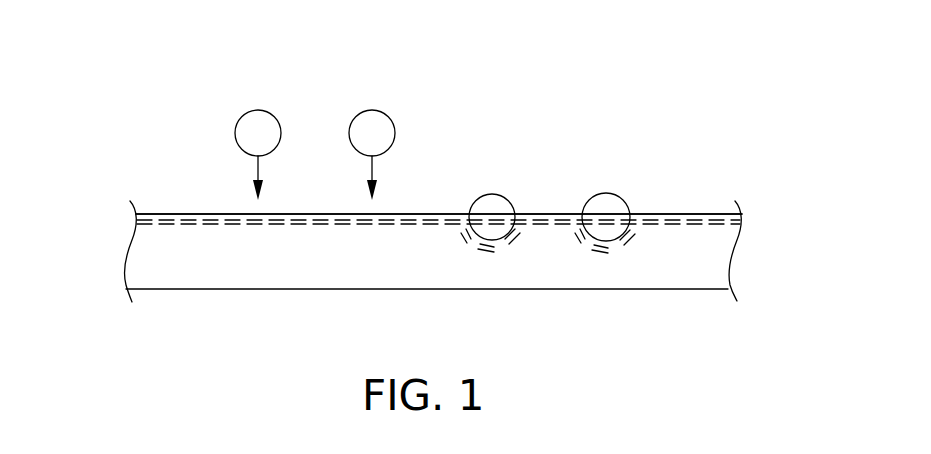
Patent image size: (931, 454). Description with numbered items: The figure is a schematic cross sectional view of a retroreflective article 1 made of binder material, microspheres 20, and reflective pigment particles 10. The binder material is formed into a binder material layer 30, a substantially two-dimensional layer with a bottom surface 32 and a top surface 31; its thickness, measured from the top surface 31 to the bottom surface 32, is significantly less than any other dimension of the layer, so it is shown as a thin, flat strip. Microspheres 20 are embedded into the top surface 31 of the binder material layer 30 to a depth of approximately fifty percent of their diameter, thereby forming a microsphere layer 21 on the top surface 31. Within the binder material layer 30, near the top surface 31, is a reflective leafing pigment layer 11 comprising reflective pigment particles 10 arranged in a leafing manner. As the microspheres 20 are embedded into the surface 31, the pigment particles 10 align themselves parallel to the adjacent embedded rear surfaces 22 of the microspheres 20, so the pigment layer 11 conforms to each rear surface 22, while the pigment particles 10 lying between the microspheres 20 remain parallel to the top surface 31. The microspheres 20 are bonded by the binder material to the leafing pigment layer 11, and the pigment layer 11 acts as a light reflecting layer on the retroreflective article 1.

The retroreflective article 1 is at (683, 70).
The reflective pigment particles 10 is at (400, 214).
The reflective leafing pigment layer 11 is at (172, 237).
The microspheres 20 is at (258, 125).
The microsphere layer 21 is at (530, 190).
The rear surface 22 is at (489, 240).
The binder material layer 30 is at (433, 251).
The top surface 31 is at (193, 214).
The bottom surface 32 is at (347, 291).